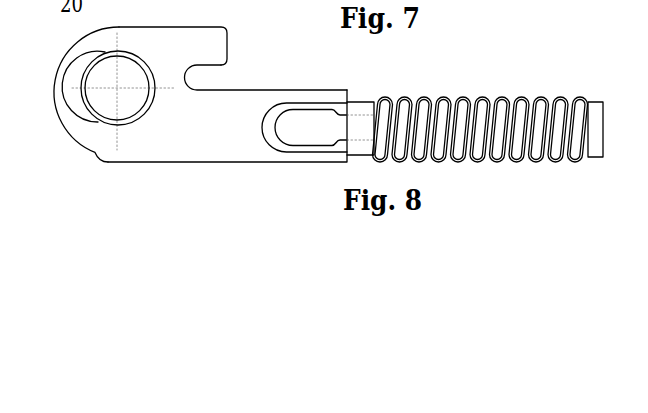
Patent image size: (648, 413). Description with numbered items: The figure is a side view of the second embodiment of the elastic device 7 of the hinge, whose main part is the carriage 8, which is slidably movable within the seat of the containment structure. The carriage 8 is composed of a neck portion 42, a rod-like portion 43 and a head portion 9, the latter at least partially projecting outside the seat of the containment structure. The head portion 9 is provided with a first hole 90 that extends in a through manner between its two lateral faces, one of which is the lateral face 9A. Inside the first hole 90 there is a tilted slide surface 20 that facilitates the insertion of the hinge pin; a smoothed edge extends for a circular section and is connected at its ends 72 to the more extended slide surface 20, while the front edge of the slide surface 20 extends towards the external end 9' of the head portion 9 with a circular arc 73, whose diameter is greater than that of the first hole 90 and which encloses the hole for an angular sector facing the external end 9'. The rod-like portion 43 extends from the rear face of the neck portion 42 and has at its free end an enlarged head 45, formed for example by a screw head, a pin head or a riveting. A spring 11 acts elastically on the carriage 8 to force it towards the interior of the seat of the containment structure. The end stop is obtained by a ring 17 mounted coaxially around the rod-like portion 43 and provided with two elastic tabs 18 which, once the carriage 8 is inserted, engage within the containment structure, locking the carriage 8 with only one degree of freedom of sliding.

The elastic device 7 is at (504, 44).
The carriage 8 is at (222, 162).
The head portion 9 is at (173, 32).
The lateral face 9A is at (217, 56).
The external end 9' is at (74, 94).
The spring 11 is at (480, 102).
The ring 17 is at (355, 125).
The elastic tabs 18 is at (310, 122).
The slide surface 20 is at (130, 55).
The neck portion 42 is at (232, 128).
The rod-like portion 43 is at (455, 112).
The enlarged head 45 is at (595, 135).
The ends 72 is at (98, 53).
The circular arc 73 is at (62, 82).
The first hole 90 is at (128, 102).